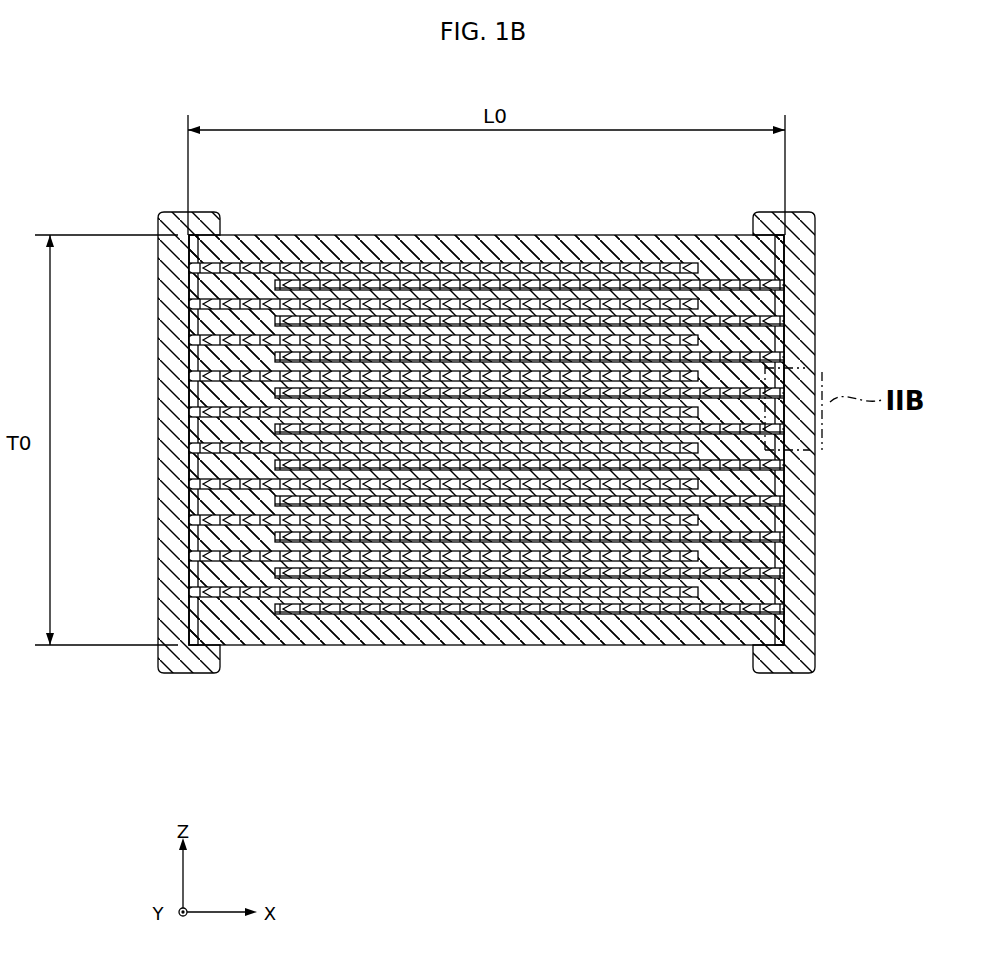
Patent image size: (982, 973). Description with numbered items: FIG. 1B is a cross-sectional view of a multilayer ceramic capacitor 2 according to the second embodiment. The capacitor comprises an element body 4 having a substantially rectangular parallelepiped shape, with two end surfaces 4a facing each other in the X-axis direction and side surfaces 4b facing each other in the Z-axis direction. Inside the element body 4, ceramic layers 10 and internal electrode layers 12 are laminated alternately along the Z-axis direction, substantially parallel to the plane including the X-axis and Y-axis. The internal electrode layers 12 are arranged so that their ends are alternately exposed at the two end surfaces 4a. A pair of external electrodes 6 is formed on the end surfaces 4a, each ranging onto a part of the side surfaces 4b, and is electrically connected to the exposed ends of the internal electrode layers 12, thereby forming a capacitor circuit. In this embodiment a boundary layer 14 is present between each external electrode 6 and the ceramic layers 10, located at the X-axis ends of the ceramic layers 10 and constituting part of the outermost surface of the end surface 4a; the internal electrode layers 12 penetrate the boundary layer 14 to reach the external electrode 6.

The multilayer ceramic capacitor 2 is at (475, 446).
The element body 4 is at (475, 450).
The end surface 4a is at (190, 460).
The side surface 4b is at (332, 236).
The external electrode 6 is at (800, 212).
The ceramic layer 10 is at (436, 265).
The internal electrode layer 12 is at (548, 262).
The boundary layer 14 is at (188, 287).